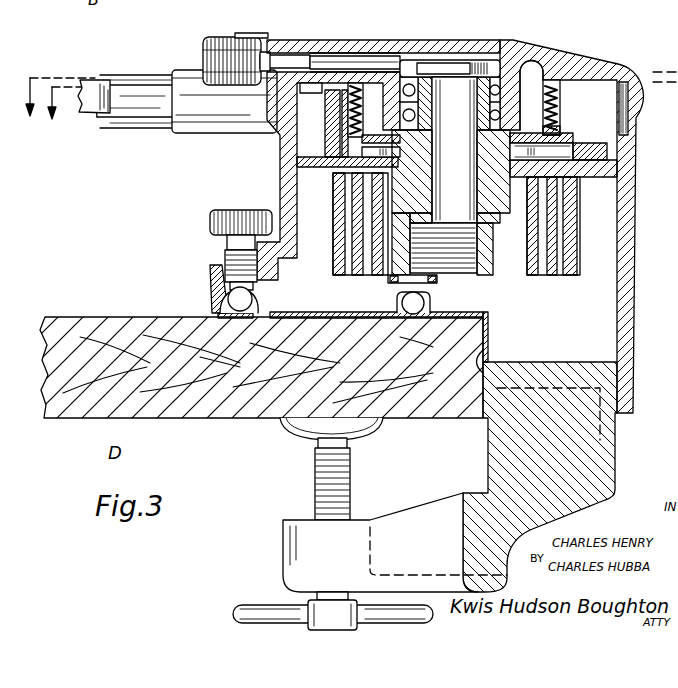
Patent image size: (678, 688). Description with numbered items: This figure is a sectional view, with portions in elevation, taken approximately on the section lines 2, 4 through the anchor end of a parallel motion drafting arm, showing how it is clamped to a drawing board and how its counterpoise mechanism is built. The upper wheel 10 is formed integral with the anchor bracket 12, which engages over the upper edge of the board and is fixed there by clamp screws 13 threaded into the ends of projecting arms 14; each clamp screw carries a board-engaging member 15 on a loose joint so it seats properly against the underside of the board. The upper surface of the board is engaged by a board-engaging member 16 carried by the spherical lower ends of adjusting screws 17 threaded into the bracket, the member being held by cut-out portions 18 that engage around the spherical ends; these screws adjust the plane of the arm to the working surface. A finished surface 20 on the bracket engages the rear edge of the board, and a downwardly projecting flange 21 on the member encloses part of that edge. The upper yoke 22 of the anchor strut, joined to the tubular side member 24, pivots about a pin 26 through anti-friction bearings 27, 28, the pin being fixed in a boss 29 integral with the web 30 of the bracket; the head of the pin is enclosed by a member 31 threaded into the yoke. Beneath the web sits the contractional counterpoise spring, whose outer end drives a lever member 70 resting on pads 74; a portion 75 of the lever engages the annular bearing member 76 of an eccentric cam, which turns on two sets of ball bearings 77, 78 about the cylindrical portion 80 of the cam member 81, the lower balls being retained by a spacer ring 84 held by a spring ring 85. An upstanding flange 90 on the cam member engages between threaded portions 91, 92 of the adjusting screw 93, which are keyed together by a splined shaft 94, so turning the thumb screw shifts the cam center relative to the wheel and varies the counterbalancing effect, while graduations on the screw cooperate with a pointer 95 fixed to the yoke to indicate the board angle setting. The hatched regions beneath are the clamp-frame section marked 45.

The section line of Fig. 2 is at (70, 115).
The section line 4 is at (58, 111).
The upper wheel 10 is at (630, 133).
The anchor bracket 12 is at (625, 279).
The clamp screw 13 is at (316, 479).
The projecting arm 14 is at (420, 517).
The board-engaging member 15 is at (282, 420).
The board-engaging member 16 is at (325, 315).
The adjusting screw 17 is at (210, 224).
The cut-out portion 18 is at (256, 302).
The finished surface 20 is at (484, 344).
The downwardly projecting flange 21 is at (486, 323).
The upper yoke 22 is at (543, 58).
The tubular side member 24 is at (142, 90).
The pin 26 is at (461, 156).
The anti-friction bearing 27 is at (423, 89).
The anti-friction bearing 28 is at (481, 113).
The boss 29 is at (507, 212).
The web 30 is at (622, 188).
The head-enclosing member 31 is at (465, 43).
The motor field laminations 45 is at (578, 264).
The lever member 70 is at (577, 155).
The pad 74 is at (325, 168).
The portion of lever member 75 is at (326, 110).
The annular bearing member 76 is at (343, 123).
The ball bearings 77 is at (357, 112).
The ball bearings 78 is at (358, 121).
The cylindrical portion 80 is at (547, 113).
The cam member 81 is at (577, 67).
The spacer ring 84 is at (559, 130).
The spring ring 85 is at (559, 107).
The upstanding flange 90 is at (332, 53).
The threaded portion 91 is at (296, 42).
The threaded portion 92 is at (383, 49).
The adjusting screw 93 is at (235, 44).
The splined shaft 94 is at (343, 62).
The pointer 95 is at (250, 32).